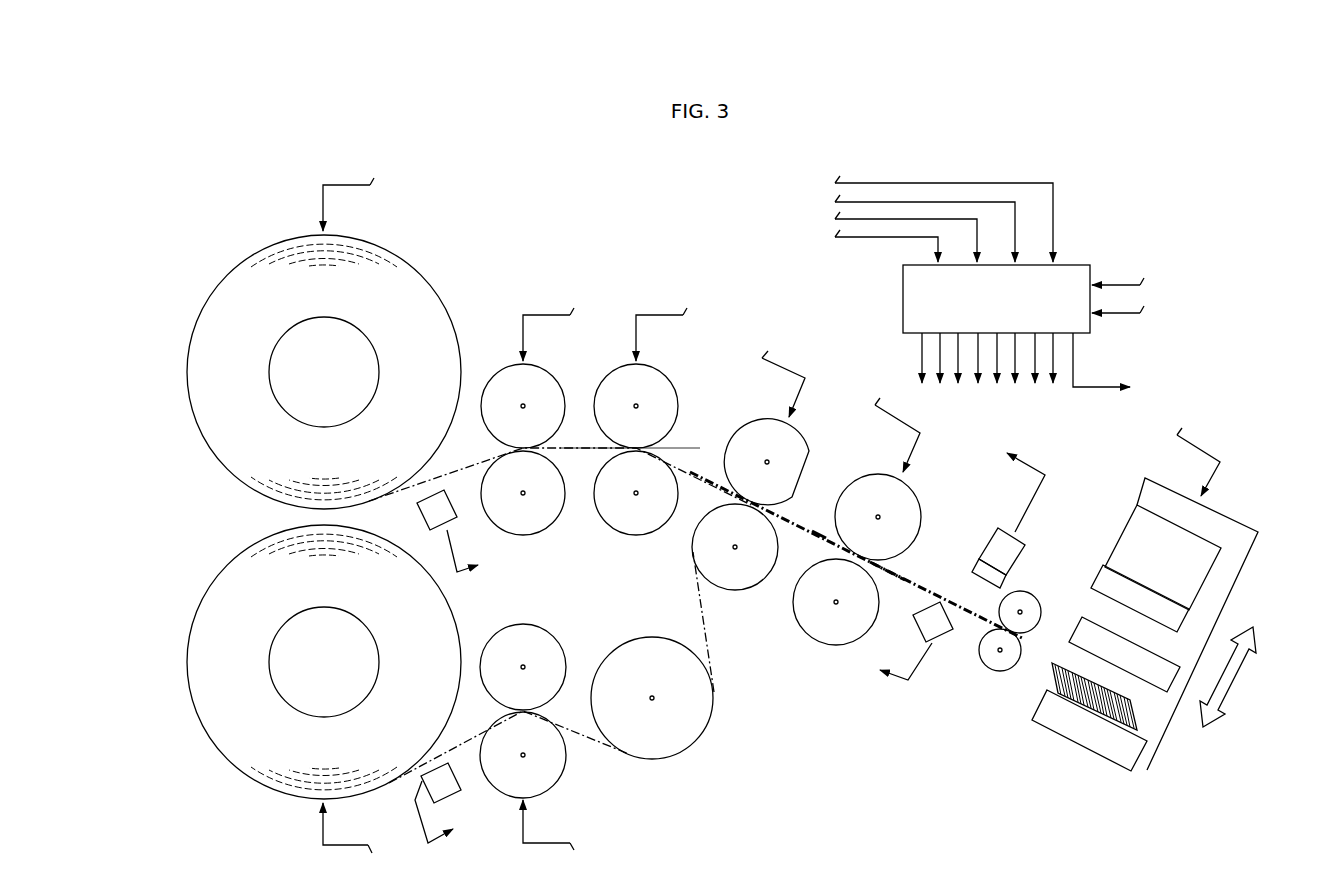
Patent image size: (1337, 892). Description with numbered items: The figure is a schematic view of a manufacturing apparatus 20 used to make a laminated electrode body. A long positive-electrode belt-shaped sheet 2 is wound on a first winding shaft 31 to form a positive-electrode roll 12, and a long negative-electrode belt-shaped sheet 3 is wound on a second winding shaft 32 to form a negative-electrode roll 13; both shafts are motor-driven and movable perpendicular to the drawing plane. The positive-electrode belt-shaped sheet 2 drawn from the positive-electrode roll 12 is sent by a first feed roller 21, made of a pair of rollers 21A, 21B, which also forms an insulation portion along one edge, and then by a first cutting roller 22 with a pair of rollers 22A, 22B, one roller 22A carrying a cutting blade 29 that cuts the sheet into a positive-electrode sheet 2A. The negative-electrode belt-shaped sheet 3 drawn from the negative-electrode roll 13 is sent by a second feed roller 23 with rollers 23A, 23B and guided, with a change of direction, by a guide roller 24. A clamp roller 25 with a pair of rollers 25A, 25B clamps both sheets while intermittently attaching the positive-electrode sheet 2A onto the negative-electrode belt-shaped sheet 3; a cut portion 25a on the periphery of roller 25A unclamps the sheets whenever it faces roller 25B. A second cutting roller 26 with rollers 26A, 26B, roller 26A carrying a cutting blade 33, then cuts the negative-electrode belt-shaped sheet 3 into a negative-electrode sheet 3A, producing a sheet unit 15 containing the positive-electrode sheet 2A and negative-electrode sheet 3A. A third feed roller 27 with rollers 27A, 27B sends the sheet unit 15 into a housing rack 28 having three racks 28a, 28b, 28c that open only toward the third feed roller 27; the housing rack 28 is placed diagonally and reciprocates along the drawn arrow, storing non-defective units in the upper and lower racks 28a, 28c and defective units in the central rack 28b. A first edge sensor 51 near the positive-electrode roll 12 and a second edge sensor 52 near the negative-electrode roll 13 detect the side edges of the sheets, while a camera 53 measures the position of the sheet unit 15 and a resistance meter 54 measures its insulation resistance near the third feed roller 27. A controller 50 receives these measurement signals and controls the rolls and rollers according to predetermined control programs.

The positive-electrode belt-shaped sheet 2 is at (577, 455).
The positive-electrode sheet 2A is at (688, 474).
The negative-electrode belt-shaped sheet 3 is at (574, 730).
The negative-electrode sheet 3A is at (904, 590).
The positive-electrode roll 12 is at (242, 258).
The negative-electrode roll 13 is at (213, 743).
The sheet unit 15 is at (1128, 692).
The manufacturing apparatus 20 is at (630, 266).
The first feed roller 21 is at (532, 438).
The roller 21A is at (548, 385).
The roller 21B is at (530, 530).
The first cutting roller 22 is at (673, 438).
The roller 22A is at (664, 380).
The roller 22B is at (627, 530).
The second feed roller 23 is at (548, 714).
The roller 23A is at (507, 623).
The roller 23B is at (552, 784).
The guide roller 24 is at (650, 636).
The clamp roller 25 is at (775, 486).
The roller 25A is at (753, 423).
The cut portion 25a is at (806, 486).
The roller 25B is at (740, 589).
The second cutting roller 26 is at (878, 539).
The roller 26A is at (871, 476).
The roller 26B is at (833, 645).
The third feed roller 27 is at (1023, 623).
The roller 27A is at (1042, 600).
The roller 27B is at (992, 672).
The housing rack 28 is at (1146, 599).
The rack 28a is at (1128, 573).
The rack 28b is at (1125, 632).
The rack 28c is at (1047, 690).
The cutting blade 29 is at (660, 448).
The first winding shaft 31 is at (290, 352).
The second winding shaft 32 is at (298, 637).
The cutting blade 33 is at (820, 542).
The controller 50 is at (1085, 268).
The first edge sensor 51 is at (423, 520).
The second edge sensor 52 is at (455, 800).
The camera 53 is at (992, 535).
The resistance meter 54 is at (935, 643).